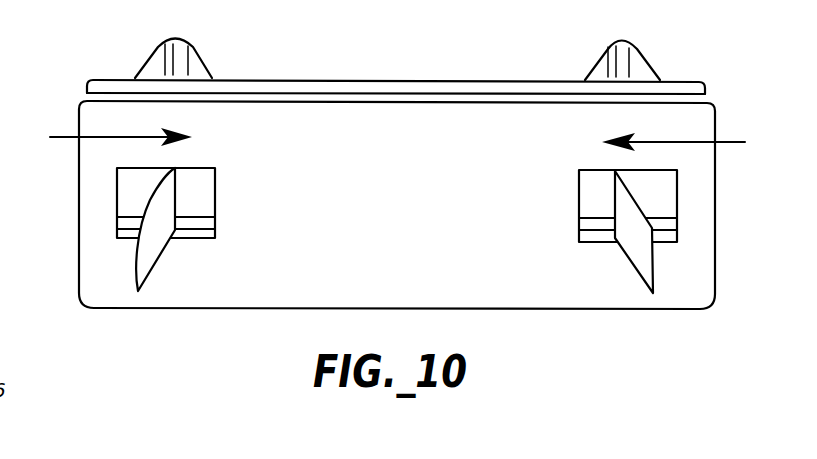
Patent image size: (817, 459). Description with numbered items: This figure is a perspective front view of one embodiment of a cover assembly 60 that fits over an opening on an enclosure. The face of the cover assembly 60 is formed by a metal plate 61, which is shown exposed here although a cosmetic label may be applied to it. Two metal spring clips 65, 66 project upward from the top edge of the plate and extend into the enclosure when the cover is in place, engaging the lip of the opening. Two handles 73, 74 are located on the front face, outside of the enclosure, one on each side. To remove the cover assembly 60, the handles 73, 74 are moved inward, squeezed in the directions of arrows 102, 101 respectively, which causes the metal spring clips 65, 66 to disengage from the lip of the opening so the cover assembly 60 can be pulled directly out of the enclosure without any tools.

The cover assembly 60 is at (94, 53).
The metal plate 61 is at (493, 298).
The metal spring clip 65 is at (648, 58).
The metal spring clip 66 is at (200, 57).
The handle 73 is at (640, 247).
The handle 74 is at (153, 243).
The arrow 101 is at (67, 137).
The arrow 102 is at (720, 143).